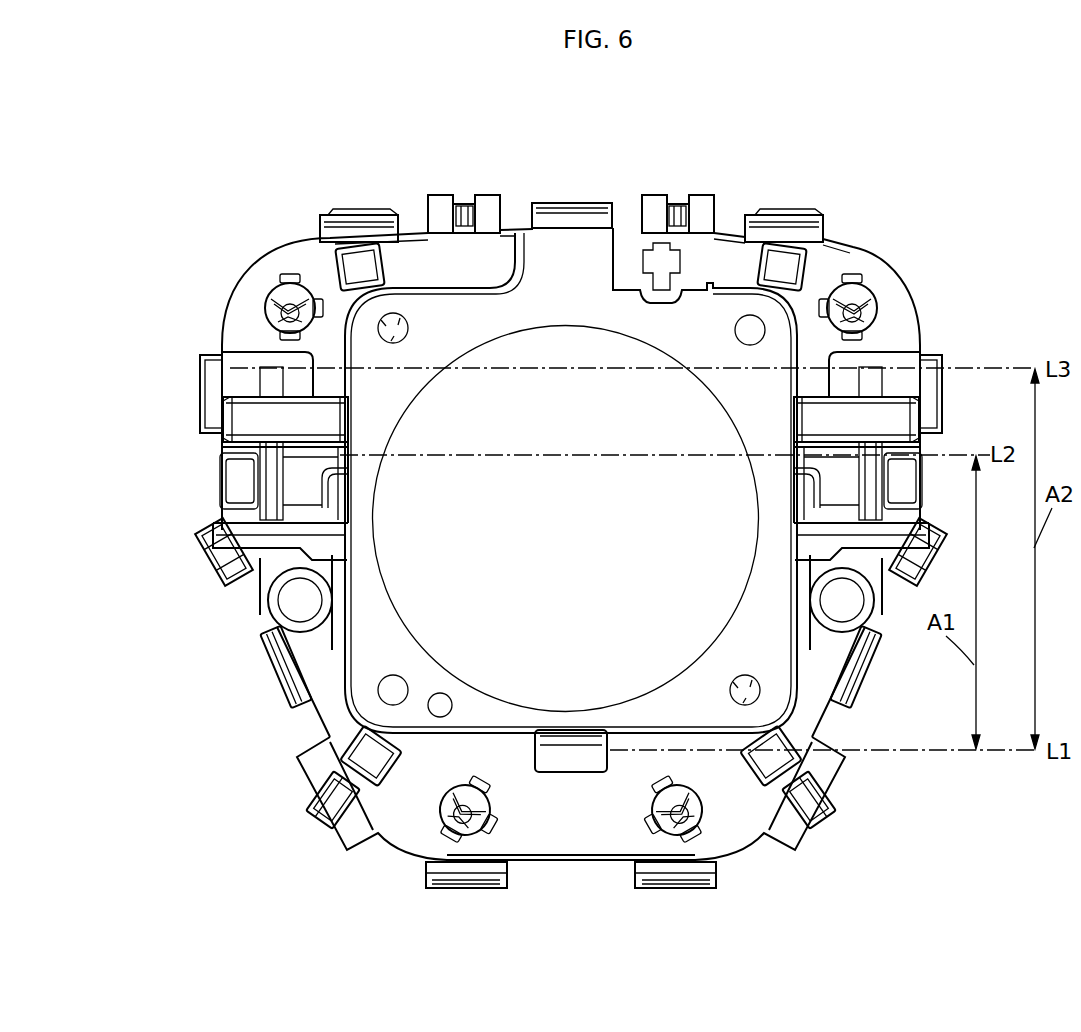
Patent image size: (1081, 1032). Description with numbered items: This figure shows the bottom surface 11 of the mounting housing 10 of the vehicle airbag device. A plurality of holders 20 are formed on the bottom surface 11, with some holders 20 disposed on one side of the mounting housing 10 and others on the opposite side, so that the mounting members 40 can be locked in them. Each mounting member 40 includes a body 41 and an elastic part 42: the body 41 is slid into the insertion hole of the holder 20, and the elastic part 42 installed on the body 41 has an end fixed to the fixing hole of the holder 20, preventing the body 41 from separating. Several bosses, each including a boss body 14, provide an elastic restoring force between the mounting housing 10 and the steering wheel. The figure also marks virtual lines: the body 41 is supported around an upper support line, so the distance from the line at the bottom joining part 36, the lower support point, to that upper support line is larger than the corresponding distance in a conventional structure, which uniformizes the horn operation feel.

The mounting housing 10 is at (748, 193).
The bottom surface 11 is at (428, 258).
The boss body 14 is at (266, 315).
The holder 20 is at (307, 392).
The bottom joining part 36 is at (573, 755).
The mounting member 40 is at (157, 585).
The body 41 is at (276, 505).
The elastic part 42 is at (272, 613).